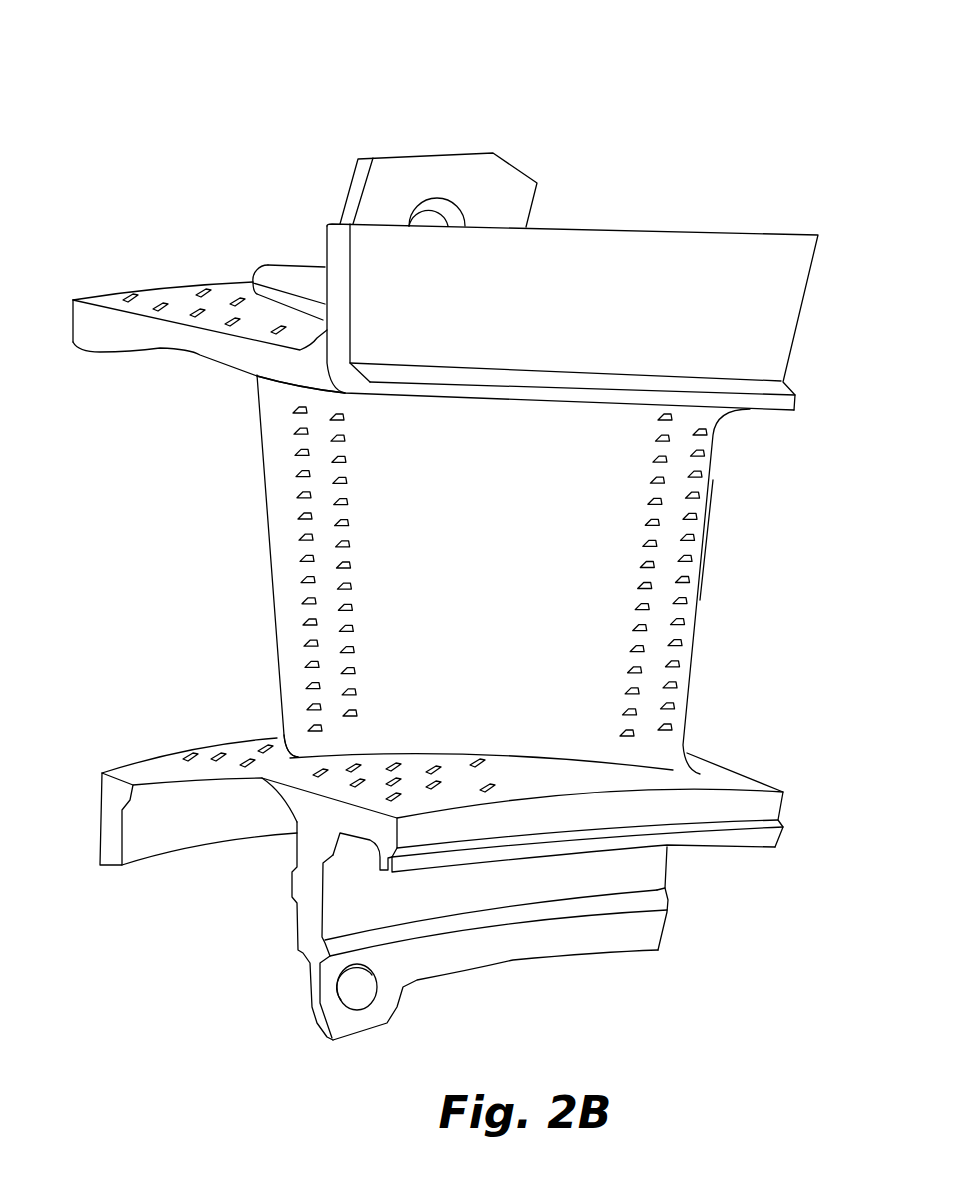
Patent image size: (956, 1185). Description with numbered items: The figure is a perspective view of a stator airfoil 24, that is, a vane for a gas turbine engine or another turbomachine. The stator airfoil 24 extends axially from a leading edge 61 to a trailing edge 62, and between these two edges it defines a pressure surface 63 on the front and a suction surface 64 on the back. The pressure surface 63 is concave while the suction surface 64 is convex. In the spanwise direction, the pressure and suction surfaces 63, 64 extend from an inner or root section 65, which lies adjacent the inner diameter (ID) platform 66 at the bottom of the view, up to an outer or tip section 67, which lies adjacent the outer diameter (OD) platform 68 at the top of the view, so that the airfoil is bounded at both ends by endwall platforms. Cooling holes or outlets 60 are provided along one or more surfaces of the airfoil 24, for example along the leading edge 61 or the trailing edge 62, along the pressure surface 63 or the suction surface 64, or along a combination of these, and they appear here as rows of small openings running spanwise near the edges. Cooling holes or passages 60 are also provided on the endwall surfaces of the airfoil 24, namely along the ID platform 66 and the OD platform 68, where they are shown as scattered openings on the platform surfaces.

The stator airfoil 24 is at (105, 145).
The cooling holes 60 is at (205, 292).
The leading edge 61 is at (258, 447).
The trailing edge 62 is at (693, 635).
The pressure surface 63 is at (407, 571).
The suction surface 64 is at (700, 572).
The inner section 65 is at (297, 738).
The ID platform 66 is at (770, 802).
The outer section 67 is at (273, 402).
The OD platform 68 is at (90, 335).